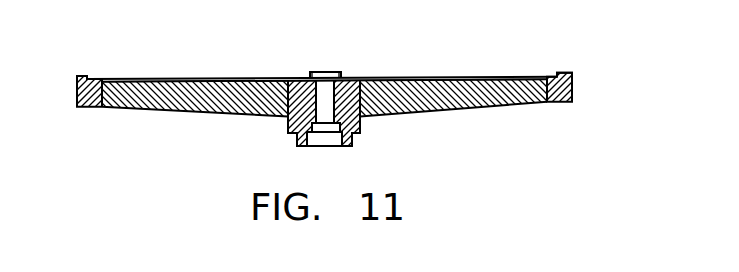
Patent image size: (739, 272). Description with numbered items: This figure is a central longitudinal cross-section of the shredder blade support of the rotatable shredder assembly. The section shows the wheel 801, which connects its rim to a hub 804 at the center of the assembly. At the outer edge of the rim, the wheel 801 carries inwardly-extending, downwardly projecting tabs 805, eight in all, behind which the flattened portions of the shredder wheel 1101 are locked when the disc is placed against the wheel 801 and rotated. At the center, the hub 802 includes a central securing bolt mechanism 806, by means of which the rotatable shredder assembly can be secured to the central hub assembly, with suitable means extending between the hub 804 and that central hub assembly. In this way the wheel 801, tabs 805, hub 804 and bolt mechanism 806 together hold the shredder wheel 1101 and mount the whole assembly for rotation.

The shredder wheel 1101 is at (220, 80).
The central securing bolt mechanism 806 is at (332, 73).
The hub 802 is at (405, 87).
The inwardly-extending downwardly projecting tabs 805 is at (565, 72).
The hub 804 is at (362, 122).
The wheel 801 is at (572, 93).